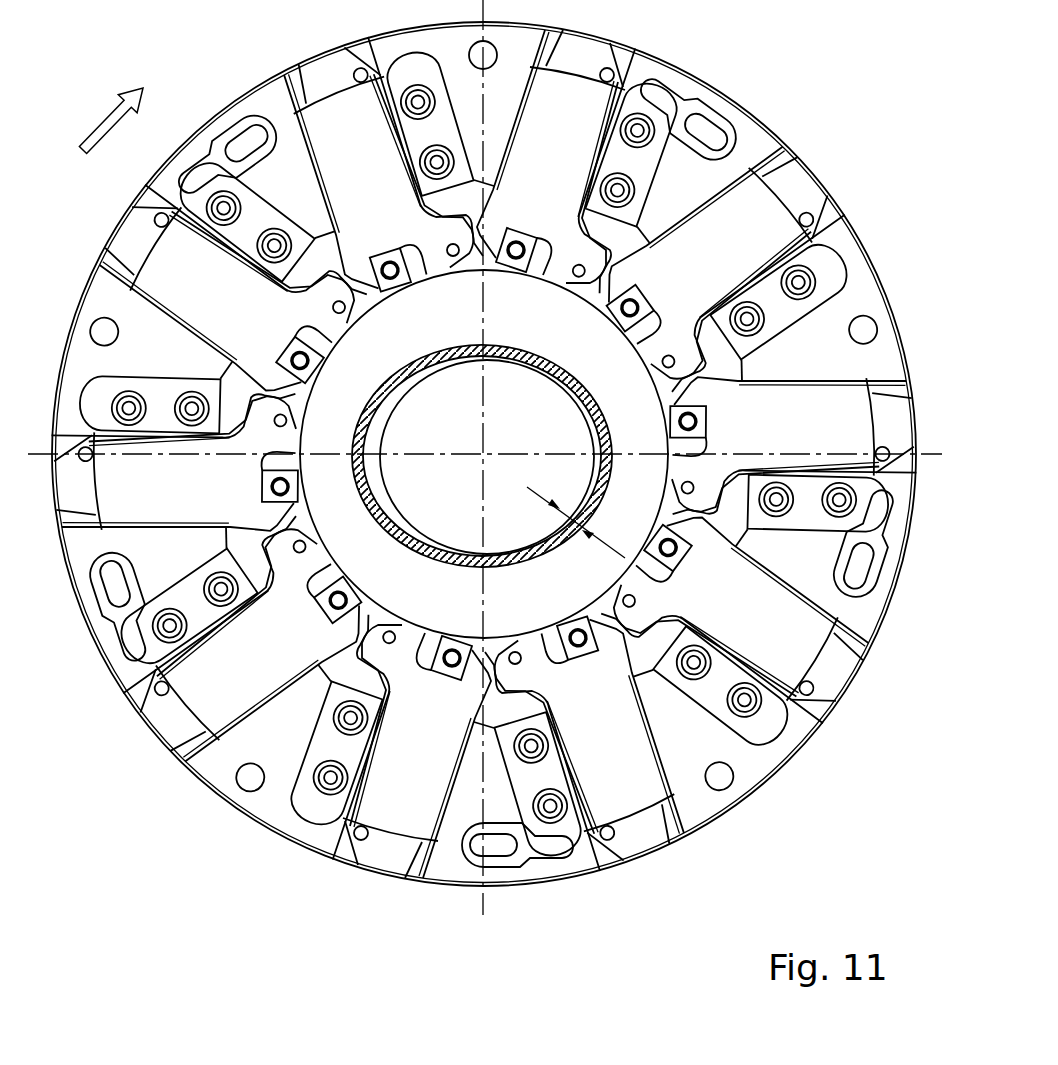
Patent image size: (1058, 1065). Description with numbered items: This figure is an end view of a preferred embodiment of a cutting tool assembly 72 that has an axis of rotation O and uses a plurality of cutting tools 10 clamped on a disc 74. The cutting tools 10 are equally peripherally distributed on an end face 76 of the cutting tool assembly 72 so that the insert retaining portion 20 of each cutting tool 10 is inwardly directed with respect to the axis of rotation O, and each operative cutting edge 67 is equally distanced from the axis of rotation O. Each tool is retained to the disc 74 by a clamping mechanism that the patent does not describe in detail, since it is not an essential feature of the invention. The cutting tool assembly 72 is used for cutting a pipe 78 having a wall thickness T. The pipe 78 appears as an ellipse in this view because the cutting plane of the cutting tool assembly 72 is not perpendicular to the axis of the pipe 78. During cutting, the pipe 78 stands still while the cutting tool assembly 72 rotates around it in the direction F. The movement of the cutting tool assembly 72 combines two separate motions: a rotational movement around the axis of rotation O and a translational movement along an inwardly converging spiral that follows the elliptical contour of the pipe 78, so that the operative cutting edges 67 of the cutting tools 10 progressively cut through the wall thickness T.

The cutting tool 10 is at (404, 797).
The insert retaining portion 20 is at (545, 636).
The operative cutting edge 67 is at (444, 645).
The cutting tool assembly 72 is at (176, 940).
The disc 74 is at (273, 823).
The end face 76 is at (217, 762).
The pipe 78 is at (421, 362).
The axis of rotation O is at (486, 453).
The wall thickness T is at (578, 522).
The direction of rotation F is at (106, 121).